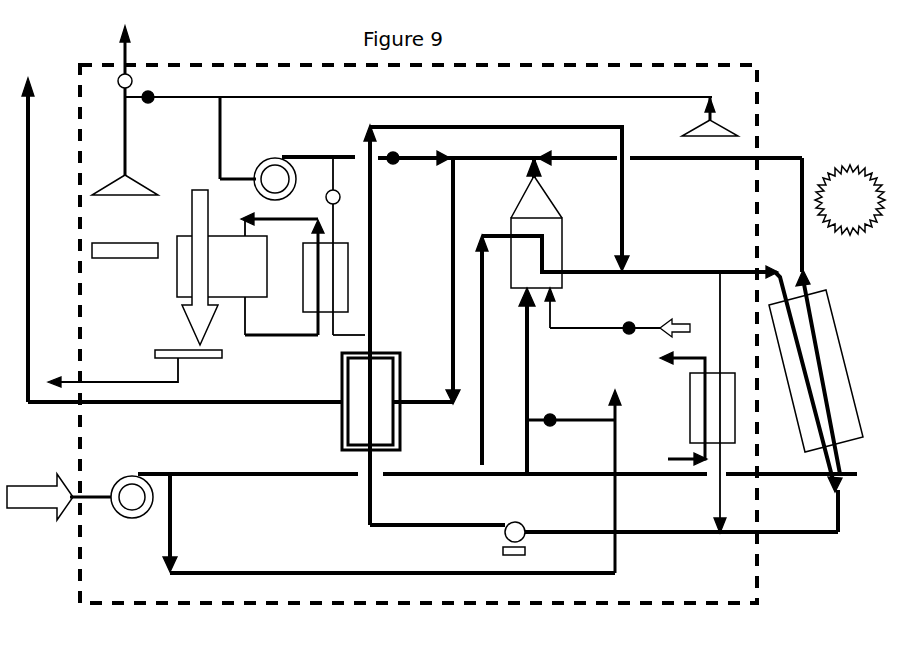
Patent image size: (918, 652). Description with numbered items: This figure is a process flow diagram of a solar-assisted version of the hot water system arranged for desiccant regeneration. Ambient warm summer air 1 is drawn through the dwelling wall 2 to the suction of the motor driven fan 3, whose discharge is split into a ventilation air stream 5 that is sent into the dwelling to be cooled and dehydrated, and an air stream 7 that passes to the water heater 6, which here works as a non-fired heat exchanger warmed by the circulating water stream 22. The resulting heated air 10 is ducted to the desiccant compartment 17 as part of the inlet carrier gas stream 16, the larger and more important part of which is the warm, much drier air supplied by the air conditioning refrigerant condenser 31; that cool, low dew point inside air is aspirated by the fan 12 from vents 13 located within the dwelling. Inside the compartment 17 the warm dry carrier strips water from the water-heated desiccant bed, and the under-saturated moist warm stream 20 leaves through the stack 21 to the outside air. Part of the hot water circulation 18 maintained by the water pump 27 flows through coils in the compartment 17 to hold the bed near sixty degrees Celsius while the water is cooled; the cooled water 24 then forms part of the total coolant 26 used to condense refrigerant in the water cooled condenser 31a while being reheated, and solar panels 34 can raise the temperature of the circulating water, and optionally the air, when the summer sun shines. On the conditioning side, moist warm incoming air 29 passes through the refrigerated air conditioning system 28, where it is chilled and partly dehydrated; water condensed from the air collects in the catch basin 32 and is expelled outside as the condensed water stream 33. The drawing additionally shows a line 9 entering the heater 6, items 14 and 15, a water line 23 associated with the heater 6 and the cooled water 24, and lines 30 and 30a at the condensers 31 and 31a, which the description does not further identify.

The ambient warm summer air 1 is at (40, 513).
The dwelling wall 2 is at (203, 608).
The motor driven fan 3 is at (214, 513).
The ventilation air stream 5 is at (620, 489).
The water heater 6 is at (546, 211).
The air stream to water heater 7 is at (556, 381).
The gas supply line 9 is at (617, 312).
The heated air 10 is at (590, 202).
The fan 12 is at (292, 216).
The vents 13 is at (431, 116).
The filter 14 is at (125, 268).
The vent stack 15 is at (125, 128).
The inlet carrier gas stream 16 is at (426, 281).
The desiccant compartment 17 is at (360, 392).
The hot water circulation 18 is at (419, 325).
The moist warm stream 20 is at (185, 389).
The stack 21 is at (43, 240).
The circulating water stream 22 is at (613, 350).
The line 23 is at (584, 257).
The cooled water 24 is at (527, 199).
The total coolant 26 is at (709, 402).
The water pump 27 is at (668, 522).
The refrigerated air conditioning system 28 is at (222, 266).
The moist warm incoming air 29 is at (200, 255).
The line 30 is at (270, 271).
The line 30a is at (665, 406).
The air conditioning refrigerant condenser 31 is at (312, 277).
The water cooled condenser 31a is at (690, 408).
The catch basin 32 is at (170, 350).
The condensed water stream 33 is at (113, 367).
The solar panels 34 is at (815, 379).